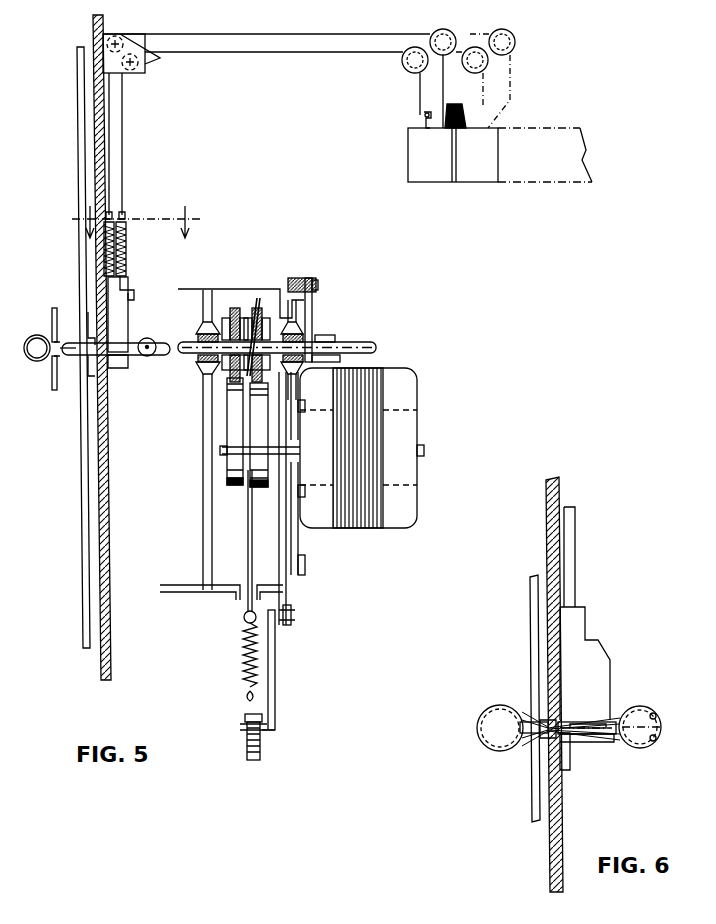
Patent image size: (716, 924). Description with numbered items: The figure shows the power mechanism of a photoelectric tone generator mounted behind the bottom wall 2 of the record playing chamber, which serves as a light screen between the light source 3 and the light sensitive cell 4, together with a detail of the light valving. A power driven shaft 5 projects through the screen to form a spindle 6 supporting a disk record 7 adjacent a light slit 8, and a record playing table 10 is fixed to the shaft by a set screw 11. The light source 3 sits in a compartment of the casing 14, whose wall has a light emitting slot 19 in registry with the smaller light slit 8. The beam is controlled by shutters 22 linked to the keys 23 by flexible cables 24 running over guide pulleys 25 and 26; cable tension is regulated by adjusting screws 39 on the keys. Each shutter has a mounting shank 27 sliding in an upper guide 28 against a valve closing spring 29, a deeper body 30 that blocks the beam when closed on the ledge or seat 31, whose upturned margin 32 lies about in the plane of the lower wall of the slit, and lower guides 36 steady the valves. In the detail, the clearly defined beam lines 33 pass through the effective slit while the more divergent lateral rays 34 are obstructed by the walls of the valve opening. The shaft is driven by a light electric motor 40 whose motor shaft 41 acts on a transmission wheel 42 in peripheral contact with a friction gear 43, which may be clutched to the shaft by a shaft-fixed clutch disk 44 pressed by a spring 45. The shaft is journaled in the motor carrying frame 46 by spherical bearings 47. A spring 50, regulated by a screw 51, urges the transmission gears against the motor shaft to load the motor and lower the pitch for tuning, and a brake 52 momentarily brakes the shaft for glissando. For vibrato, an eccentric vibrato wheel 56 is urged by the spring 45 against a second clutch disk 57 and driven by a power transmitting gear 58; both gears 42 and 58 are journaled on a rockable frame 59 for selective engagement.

In FIG. 5, the bottom wall 2 is at (108, 448).
In FIG. 6, the bottom wall 2 is at (554, 684).
In FIG. 5, the light source 3 is at (30, 360).
In FIG. 6, the light source 3 is at (478, 734).
In FIG. 5, the light sensitive cell 4 is at (142, 356).
In FIG. 6, the light sensitive cell 4 is at (654, 716).
In FIG. 5, the power driven shaft 5 is at (360, 340).
In FIG. 5, the spindle 6 is at (57, 390).
In FIG. 5, the disk record 7 is at (84, 494).
In FIG. 6, the disk record 7 is at (530, 628).
In FIG. 5, the light slit 8 is at (88, 356).
In FIG. 6, the light slit 8 is at (542, 738).
In FIG. 5, the record playing table 10 is at (90, 328).
In FIG. 5, the set screw 11 is at (136, 216).
In FIG. 5, the casing 14 is at (54, 310).
In FIG. 5, the light emitting slot 19 is at (34, 336).
In FIG. 5, the shutter 22 is at (126, 322).
In FIG. 6, the shutter 22 is at (598, 642).
In FIG. 5, the key 23 is at (432, 182).
In FIG. 5, the flexible wire or cable 24 is at (306, 52).
In FIG. 5, the guide pulley 25 is at (148, 58).
In FIG. 5, the guide pulley 26 is at (403, 66).
In FIG. 5, the mounting shank 27 is at (124, 214).
In FIG. 6, the mounting shank 27 is at (572, 527).
In FIG. 5, the upper guide 28 is at (116, 228).
In FIG. 5, the valve closing spring 29 is at (128, 250).
In FIG. 6, the shutter body 30 is at (604, 676).
In FIG. 6, the ledge or seat 31 is at (584, 742).
In FIG. 6, the upturned margin 32 is at (612, 740).
In FIG. 6, the beam lines 33 is at (612, 722).
In FIG. 6, the lateral light rays 34 is at (528, 718).
In FIG. 5, the lower guide 36 is at (134, 290).
In FIG. 5, the adjusting screw 39 is at (422, 122).
In FIG. 5, the electric motor 40 is at (410, 370).
In FIG. 5, the motor shaft 41 is at (226, 452).
In FIG. 5, the transmission wheel 42 is at (228, 470).
In FIG. 5, the friction gear 43 is at (236, 306).
In FIG. 5, the clutch disk 44 is at (214, 322).
In FIG. 5, the spring 45 is at (252, 306).
In FIG. 5, the motor carrying frame 46 is at (203, 548).
In FIG. 5, the spherical bearing 47 is at (200, 364).
In FIG. 5, the spring 50 is at (244, 672).
In FIG. 5, the screw 51 is at (260, 752).
In FIG. 5, the brake 52 is at (330, 336).
In FIG. 5, the vibrato wheel 56 is at (260, 298).
In FIG. 5, the second clutch disk 57 is at (300, 330).
In FIG. 5, the power transmitting gear 58 is at (258, 488).
In FIG. 5, the rockable frame 59 is at (248, 574).